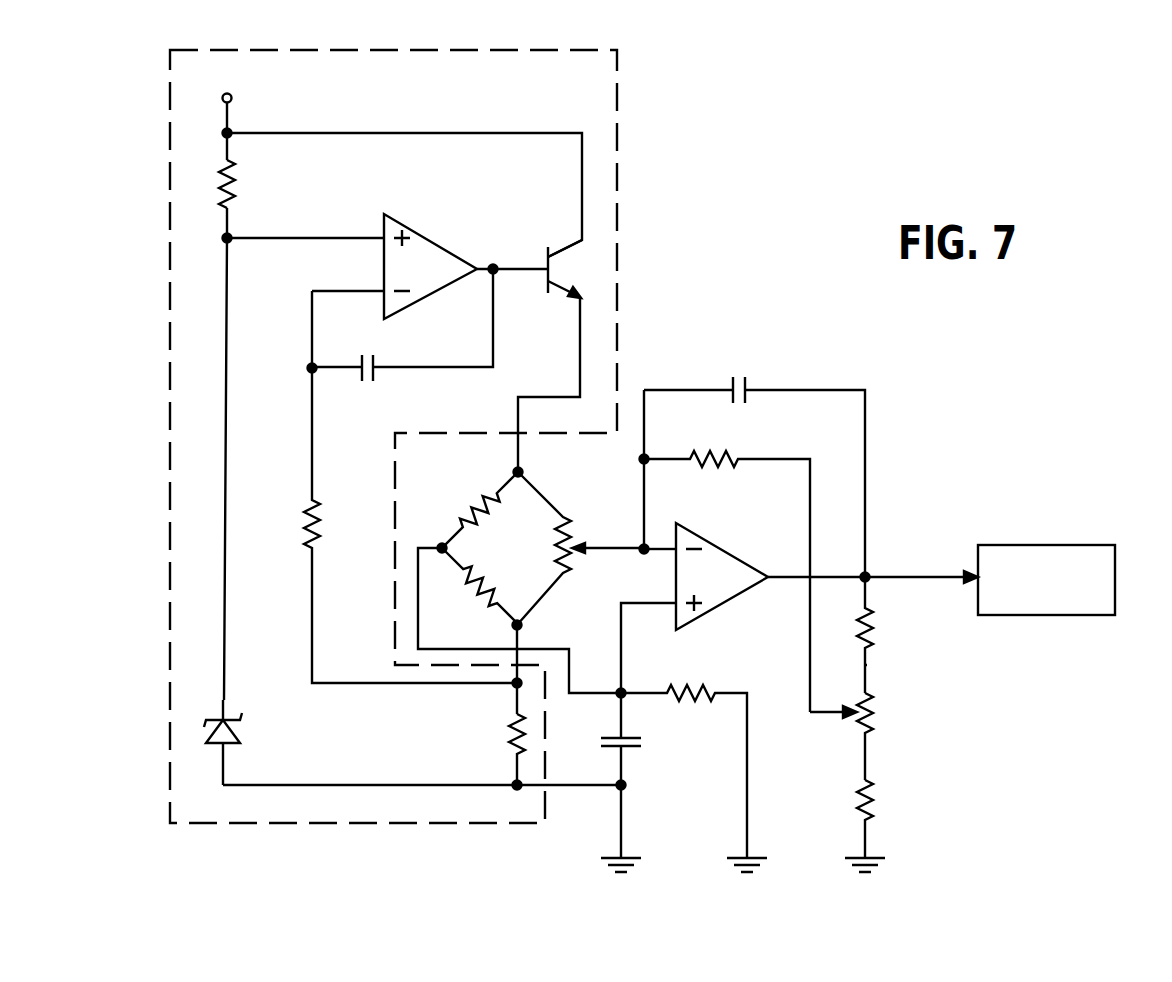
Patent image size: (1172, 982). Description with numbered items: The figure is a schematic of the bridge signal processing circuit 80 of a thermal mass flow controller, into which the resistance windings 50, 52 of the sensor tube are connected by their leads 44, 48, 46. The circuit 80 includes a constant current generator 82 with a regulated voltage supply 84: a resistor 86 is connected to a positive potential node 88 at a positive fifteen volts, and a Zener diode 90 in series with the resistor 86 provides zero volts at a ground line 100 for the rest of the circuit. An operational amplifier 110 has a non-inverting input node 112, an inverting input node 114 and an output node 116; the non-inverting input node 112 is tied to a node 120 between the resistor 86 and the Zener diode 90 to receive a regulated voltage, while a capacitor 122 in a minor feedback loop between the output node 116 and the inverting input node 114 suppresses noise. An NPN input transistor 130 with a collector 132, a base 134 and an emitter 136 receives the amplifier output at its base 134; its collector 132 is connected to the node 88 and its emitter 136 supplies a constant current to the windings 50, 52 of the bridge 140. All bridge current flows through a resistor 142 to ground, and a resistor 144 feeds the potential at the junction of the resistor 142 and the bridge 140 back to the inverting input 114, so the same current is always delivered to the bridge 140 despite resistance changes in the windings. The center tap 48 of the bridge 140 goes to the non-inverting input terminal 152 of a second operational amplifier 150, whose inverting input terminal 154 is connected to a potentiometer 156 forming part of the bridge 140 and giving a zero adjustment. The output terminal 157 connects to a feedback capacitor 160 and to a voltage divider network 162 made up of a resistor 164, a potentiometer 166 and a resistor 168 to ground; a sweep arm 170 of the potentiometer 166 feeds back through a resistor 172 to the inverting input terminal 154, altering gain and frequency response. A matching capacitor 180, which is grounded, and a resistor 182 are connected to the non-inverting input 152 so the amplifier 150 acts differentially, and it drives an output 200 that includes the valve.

The lead 44 is at (523, 470).
The lead 46 is at (522, 626).
The center tap 48 is at (440, 546).
The winding 50 is at (471, 500).
The winding 52 is at (471, 582).
The bridge signal processing circuit 80 is at (897, 465).
The constant current generator 82 is at (620, 150).
The regulated voltage supply 84 is at (224, 273).
The resistor 86 is at (236, 183).
The positive potential node 88 is at (223, 95).
The Zener diode 90 is at (232, 713).
The ground line 100 is at (316, 783).
The operational amplifier 110 is at (412, 232).
The non-inverting input node 112 is at (362, 238).
The inverting input node 114 is at (372, 290).
The output node 116 is at (478, 264).
The node 120 is at (231, 236).
The capacitor 122 is at (378, 362).
The NPN input transistor 130 is at (552, 266).
The collector 132 is at (575, 248).
The base 134 is at (526, 276).
The emitter 136 is at (577, 284).
The bridge 140 is at (446, 543).
The resistor 142 is at (512, 734).
The resistor 144 is at (308, 518).
The operational amplifier 150 is at (716, 547).
The non-inverting input terminal 152 is at (648, 606).
The inverting input terminal 154 is at (660, 547).
The potentiometer 156 is at (571, 545).
The output terminal 157 is at (776, 574).
The feedback capacitor 160 is at (746, 383).
The voltage divider network 162 is at (867, 665).
The resistor 164 is at (878, 636).
The potentiometer 166 is at (880, 712).
The resistor 168 is at (878, 803).
The sweep arm 170 is at (828, 714).
The resistor 172 is at (707, 455).
The matching capacitor 180 is at (632, 755).
The resistor 182 is at (690, 686).
The output 200 is at (1055, 545).